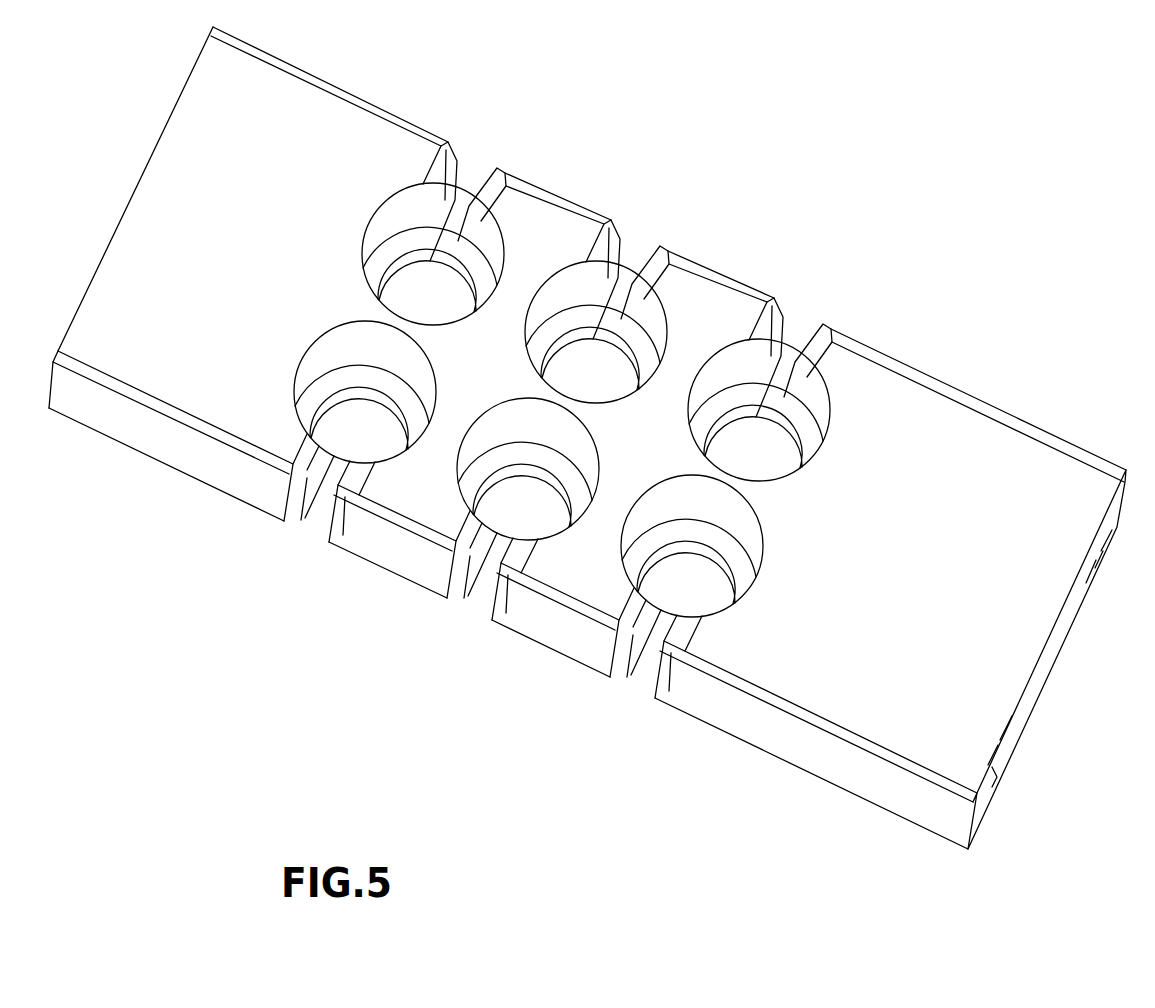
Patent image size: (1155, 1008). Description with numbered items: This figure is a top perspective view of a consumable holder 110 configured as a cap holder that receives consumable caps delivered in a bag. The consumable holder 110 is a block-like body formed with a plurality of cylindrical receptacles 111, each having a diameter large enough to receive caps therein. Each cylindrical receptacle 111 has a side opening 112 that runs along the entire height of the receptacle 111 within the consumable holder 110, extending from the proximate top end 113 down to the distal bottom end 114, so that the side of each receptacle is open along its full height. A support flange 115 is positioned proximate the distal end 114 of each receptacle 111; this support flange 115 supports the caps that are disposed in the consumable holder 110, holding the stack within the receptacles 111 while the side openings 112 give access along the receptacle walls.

The consumable holder 110 is at (980, 262).
The cylindrical receptacle 111 is at (830, 423).
The side opening 112 is at (793, 337).
The proximate top end 113 is at (689, 635).
The distal bottom end 114 is at (652, 700).
The support flange 115 is at (725, 552).